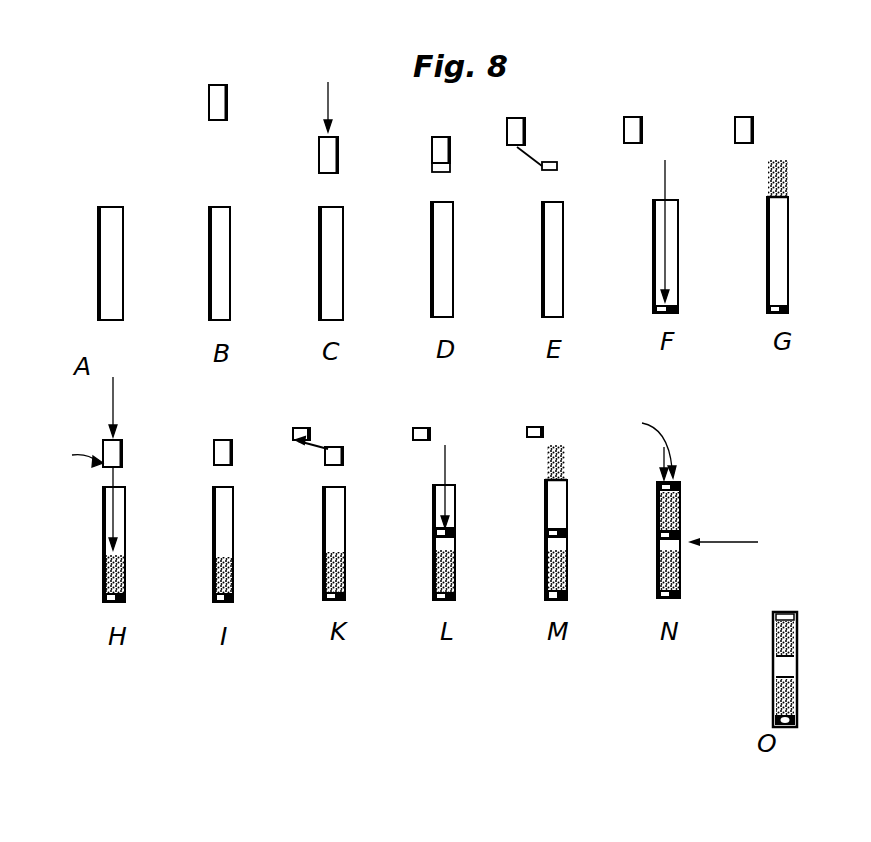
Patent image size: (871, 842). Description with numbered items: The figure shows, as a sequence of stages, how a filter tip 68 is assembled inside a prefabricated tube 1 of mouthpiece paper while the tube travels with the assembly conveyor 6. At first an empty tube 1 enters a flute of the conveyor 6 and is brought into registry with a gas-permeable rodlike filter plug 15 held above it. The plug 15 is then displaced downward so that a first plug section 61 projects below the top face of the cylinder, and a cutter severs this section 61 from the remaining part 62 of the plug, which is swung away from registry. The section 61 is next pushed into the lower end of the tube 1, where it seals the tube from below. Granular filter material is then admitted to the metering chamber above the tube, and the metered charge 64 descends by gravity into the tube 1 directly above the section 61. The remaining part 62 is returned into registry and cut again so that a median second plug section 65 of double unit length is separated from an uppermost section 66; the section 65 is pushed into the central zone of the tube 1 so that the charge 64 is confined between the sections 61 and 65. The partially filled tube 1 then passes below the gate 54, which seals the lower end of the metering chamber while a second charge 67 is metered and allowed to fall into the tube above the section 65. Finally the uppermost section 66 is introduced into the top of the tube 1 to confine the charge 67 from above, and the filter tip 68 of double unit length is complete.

The prefabricated tube 1 is at (459, 392).
The filter plug 15 is at (294, 119).
The remaining part of the filter plug 62 is at (449, 280).
The first plug section 61 is at (472, 367).
The charge of granular filter material 64 is at (470, 362).
The gate 54 is at (693, 320).
The second plug section 65 is at (470, 488).
The uppermost plug section 66 is at (477, 445).
The second charge 67 is at (637, 481).
The filter tip 68 is at (741, 541).
The conveyor 6 is at (821, 669).